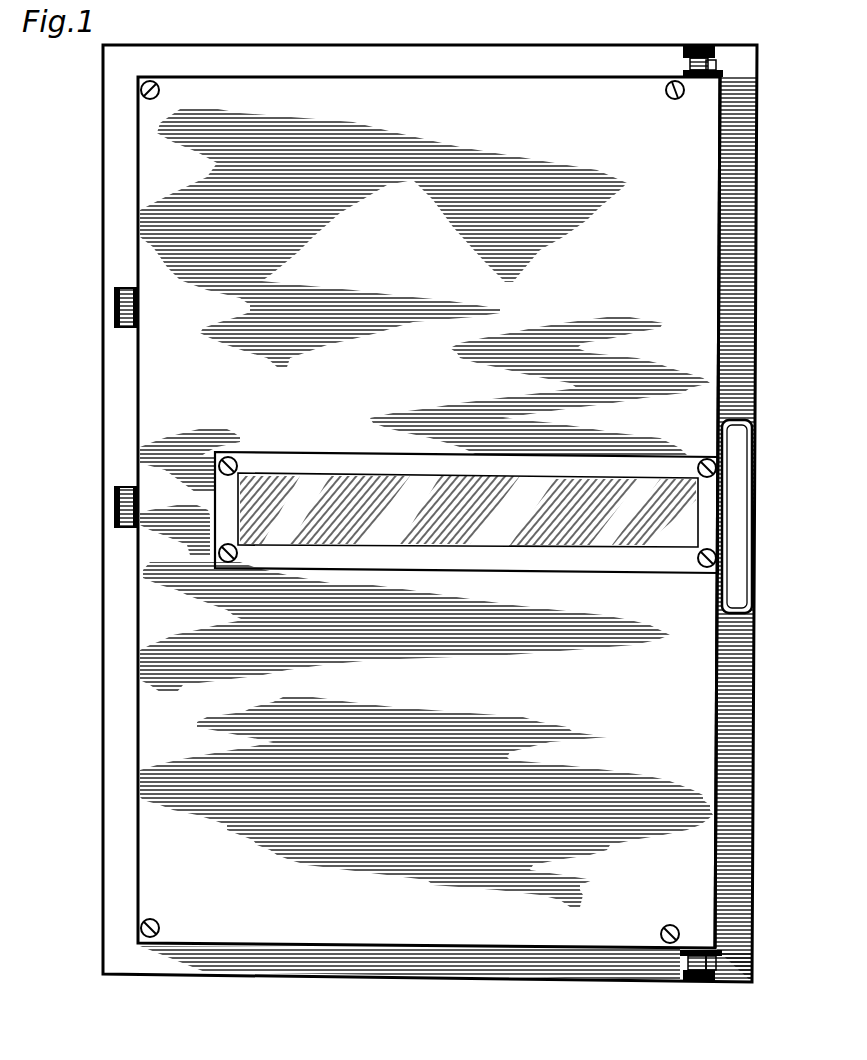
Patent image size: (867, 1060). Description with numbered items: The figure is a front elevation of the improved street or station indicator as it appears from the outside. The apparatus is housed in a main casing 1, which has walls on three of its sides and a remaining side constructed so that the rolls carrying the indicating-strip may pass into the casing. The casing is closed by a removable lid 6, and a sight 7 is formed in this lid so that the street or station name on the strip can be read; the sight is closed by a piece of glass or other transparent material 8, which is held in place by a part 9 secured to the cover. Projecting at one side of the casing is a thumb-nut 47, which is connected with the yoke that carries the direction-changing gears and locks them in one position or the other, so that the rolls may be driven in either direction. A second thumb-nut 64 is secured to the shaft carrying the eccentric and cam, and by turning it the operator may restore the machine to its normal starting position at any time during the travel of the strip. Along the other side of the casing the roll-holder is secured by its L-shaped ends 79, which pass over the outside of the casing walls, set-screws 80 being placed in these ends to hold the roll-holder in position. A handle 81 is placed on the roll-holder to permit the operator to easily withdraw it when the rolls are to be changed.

The main casing 1 is at (742, 257).
The lid 6 is at (429, 512).
The sight 7 is at (673, 480).
The transparent material 8 is at (470, 511).
The part securing the transparent material 9 is at (327, 456).
The thumb-nut 47 is at (115, 507).
The thumb-nut 64 is at (115, 307).
The L-shaped ends 79 is at (713, 72).
The set-screws 80 is at (683, 52).
The handle 81 is at (752, 540).